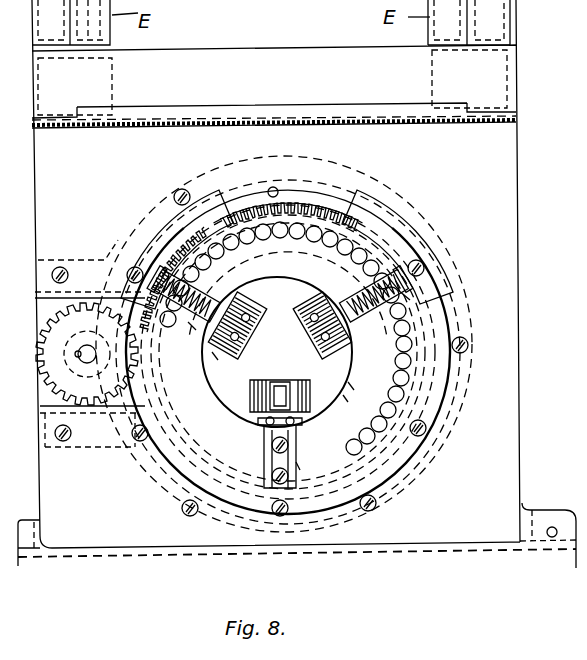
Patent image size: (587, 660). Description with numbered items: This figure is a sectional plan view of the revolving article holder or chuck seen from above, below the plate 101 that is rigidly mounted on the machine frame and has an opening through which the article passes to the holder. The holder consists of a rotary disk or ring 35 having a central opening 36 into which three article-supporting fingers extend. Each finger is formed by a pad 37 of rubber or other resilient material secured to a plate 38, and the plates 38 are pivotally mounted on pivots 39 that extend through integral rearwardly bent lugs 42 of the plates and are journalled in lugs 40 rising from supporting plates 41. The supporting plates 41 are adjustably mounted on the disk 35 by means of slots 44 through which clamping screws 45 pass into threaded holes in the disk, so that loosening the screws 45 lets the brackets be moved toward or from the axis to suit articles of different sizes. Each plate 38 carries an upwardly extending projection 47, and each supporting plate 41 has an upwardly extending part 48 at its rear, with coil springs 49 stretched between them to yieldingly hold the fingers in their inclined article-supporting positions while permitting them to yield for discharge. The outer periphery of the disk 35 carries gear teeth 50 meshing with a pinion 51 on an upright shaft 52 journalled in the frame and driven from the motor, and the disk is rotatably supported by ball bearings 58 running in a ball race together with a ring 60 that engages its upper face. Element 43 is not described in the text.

The plate 101 is at (190, 108).
The gear teeth 50 is at (316, 197).
The pinion 51 is at (60, 386).
The upright shaft 52 is at (87, 345).
The ring 60 is at (443, 397).
The ball bearings 58 is at (420, 205).
The pivots 39 is at (228, 290).
The rearwardly bent lugs 42 is at (178, 356).
The upwardly extending part 48 is at (160, 282).
The upwardly extending projection 47 is at (245, 306).
The pads 37 is at (306, 316).
The lugs 40 is at (193, 302).
The bracket 43 is at (270, 487).
The slots 44 is at (270, 455).
The clamping screws 45 is at (297, 457).
The supporting plates 41 is at (405, 310).
The coil springs 49 is at (192, 326).
The plates 38 is at (214, 356).
The central opening 36 is at (350, 386).
The rotary disk 35 is at (345, 396).